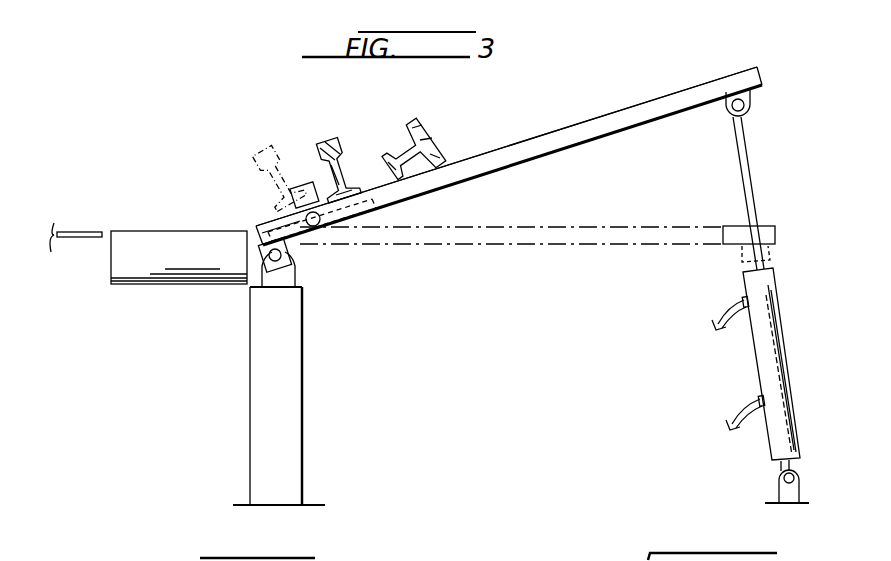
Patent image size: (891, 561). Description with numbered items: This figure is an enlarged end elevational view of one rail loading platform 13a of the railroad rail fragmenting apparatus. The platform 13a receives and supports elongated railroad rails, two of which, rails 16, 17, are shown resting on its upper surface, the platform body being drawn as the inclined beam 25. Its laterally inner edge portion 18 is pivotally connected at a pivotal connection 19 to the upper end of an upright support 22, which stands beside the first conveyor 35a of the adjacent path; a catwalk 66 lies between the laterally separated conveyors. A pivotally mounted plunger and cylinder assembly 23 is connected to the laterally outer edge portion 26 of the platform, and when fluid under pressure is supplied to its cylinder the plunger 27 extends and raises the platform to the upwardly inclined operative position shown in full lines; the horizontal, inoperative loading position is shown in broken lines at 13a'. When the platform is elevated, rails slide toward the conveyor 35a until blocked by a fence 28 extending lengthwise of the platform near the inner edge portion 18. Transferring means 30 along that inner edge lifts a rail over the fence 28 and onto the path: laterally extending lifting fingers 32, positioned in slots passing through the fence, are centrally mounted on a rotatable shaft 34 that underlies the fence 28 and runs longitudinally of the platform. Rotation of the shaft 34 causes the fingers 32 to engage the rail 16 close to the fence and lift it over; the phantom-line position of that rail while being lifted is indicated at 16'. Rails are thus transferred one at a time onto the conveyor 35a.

The loading platform 13a is at (506, 125).
The inoperative horizontal loading position 13a' is at (537, 212).
The rail 16 is at (338, 152).
The rail in lifted position 16' is at (273, 157).
The rail 17 is at (420, 122).
The laterally inner edge portion 18 is at (266, 234).
The pivotal connection 19 is at (290, 272).
The upright support 22 is at (300, 390).
The plunger and cylinder assembly 23 is at (788, 352).
The beam arm 25 is at (540, 133).
The laterally outer edge portion / cylinder 26 is at (756, 76).
The plunger 27 is at (752, 183).
The fence 28 is at (302, 182).
The transferring means 30 is at (280, 218).
The lifting finger 32 is at (368, 208).
The rotatable shaft 34 is at (322, 228).
The first conveyor 35a is at (157, 226).
The catwalk 66 is at (92, 230).